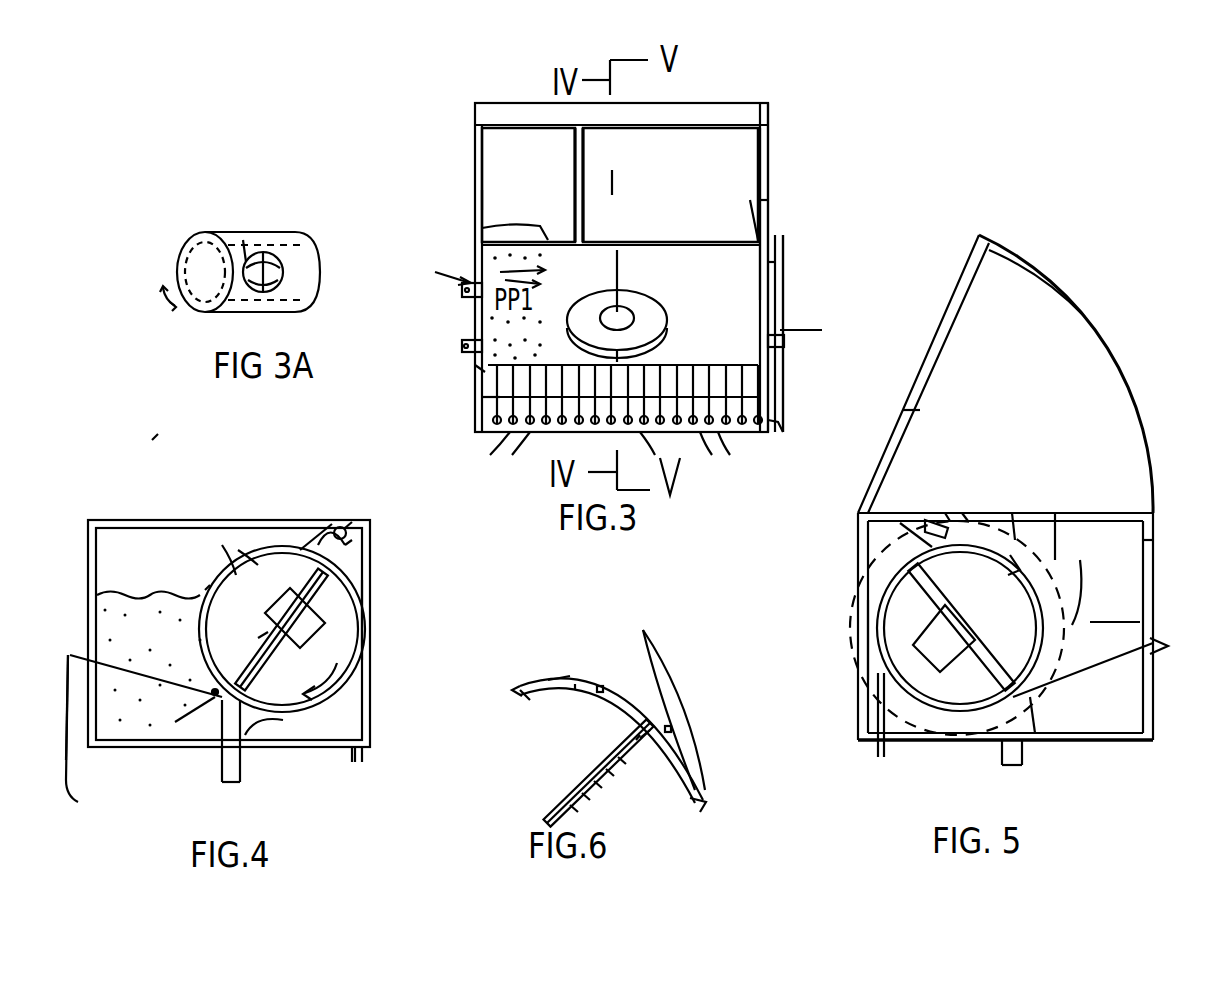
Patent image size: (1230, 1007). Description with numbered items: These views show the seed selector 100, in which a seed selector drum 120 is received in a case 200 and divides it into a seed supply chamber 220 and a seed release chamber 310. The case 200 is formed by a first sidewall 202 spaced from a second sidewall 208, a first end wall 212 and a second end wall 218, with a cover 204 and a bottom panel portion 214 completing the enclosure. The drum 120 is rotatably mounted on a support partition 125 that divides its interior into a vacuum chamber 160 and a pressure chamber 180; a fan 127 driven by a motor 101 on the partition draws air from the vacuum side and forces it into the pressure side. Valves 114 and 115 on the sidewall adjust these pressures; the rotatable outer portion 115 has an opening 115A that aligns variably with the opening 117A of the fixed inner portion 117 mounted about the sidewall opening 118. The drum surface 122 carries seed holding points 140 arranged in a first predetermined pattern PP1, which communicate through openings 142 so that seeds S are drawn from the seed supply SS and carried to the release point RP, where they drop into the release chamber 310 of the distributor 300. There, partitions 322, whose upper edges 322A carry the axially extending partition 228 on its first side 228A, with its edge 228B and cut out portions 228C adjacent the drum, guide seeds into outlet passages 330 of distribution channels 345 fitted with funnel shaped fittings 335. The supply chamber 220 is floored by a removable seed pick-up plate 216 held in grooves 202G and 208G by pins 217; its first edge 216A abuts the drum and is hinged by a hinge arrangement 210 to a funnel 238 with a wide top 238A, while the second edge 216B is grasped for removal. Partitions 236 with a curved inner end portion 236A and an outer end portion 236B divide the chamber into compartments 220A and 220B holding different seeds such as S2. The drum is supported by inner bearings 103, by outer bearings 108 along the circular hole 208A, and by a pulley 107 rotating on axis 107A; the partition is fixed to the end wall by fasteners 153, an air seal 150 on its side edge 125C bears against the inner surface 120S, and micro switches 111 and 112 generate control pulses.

In FIG. 3, the air flow 100 is at (430, 262).
In FIG. 4, the motor 101 is at (311, 644).
In FIG. 4, the inner bearings 103 is at (126, 470).
In FIG. 6, the inner bearings 103 is at (575, 685).
In FIG. 3, the pulley 107 is at (780, 312).
In FIG. 5, the pulley 107 is at (905, 745).
In FIG. 3, the axis 107A is at (800, 330).
In FIG. 5, the outer bearings 108 is at (1022, 560).
In FIG. 5, the micro switch 111 is at (968, 513).
In FIG. 3, the micro switch 112 is at (786, 346).
In FIG. 3, the valve 114 is at (782, 240).
In FIG. 3, the valve 115 is at (476, 366).
In FIG. 3A, the valve 115 is at (186, 262).
In FIG. 3A, the opening 115A is at (272, 252).
In FIG. 3A, the inner portion 117 is at (270, 240).
In FIG. 3A, the opening 117A is at (246, 242).
In FIG. 3, the opening 118 is at (482, 398).
In FIG. 3, the seed selector drum 120 is at (613, 221).
In FIG. 4, the seed selector drum 120 is at (238, 550).
In FIG. 5, the seed selector drum 120 is at (1055, 513).
In FIG. 6, the seed selector drum 120 is at (520, 685).
In FIG. 6, the inner circumferential surface 120S is at (530, 700).
In FIG. 4, the continuous outer drum surface 122 is at (228, 570).
In FIG. 5, the continuous outer drum surface 122 is at (1080, 560).
In FIG. 6, the continuous outer drum surface 122 is at (552, 680).
In FIG. 4, the support partition 125 is at (372, 595).
In FIG. 5, the support partition 125 is at (862, 656).
In FIG. 6, the first side edge 125C is at (640, 738).
In FIG. 3, the fan 127 is at (655, 305).
In FIG. 4, the fan 127 is at (262, 634).
In FIG. 3, the seed holding points 140 is at (553, 271).
In FIG. 4, the seed holding points 140 is at (278, 766).
In FIG. 6, the openings 142 is at (668, 691).
In FIG. 6, the air seal 150 is at (700, 802).
In FIG. 4, the fasteners 153 is at (224, 786).
In FIG. 4, the vacuum chamber 160 is at (273, 593).
In FIG. 5, the vacuum chamber 160 is at (1000, 604).
In FIG. 6, the vacuum chamber 160 is at (540, 811).
In FIG. 5, the pressure chamber 180 is at (953, 653).
In FIG. 6, the pressure chamber 180 is at (638, 742).
In FIG. 3, the case 200 is at (792, 188).
In FIG. 4, the case 200 is at (353, 768).
In FIG. 5, the case 200 is at (1042, 262).
In FIG. 3, the first sidewall 202 is at (462, 346).
In FIG. 3, the groove 202G is at (480, 200).
In FIG. 5, the cover 204 is at (903, 410).
In FIG. 3, the second sidewall 208 is at (782, 252).
In FIG. 3, the circular hole 208A is at (780, 216).
In FIG. 5, the circular hole 208A is at (1010, 550).
In FIG. 3, the groove 208G is at (758, 222).
In FIG. 4, the hinge arrangement 210 is at (180, 720).
In FIG. 3, the first end wall 212 is at (514, 128).
In FIG. 5, the first end wall 212 is at (1150, 565).
In FIG. 5, the bottom panel portion 214 is at (1075, 742).
In FIG. 3, the seed pick-up plate 216 is at (752, 103).
In FIG. 4, the seed pick-up plate 216 is at (72, 765).
In FIG. 5, the seed pick-up plate 216 is at (1148, 742).
In FIG. 4, the first edge 216A is at (212, 750).
In FIG. 5, the first edge 216A is at (1043, 702).
In FIG. 4, the second edge 216B is at (66, 780).
In FIG. 5, the second edge 216B is at (1090, 660).
In FIG. 3, the removable pins 217 is at (760, 165).
In FIG. 3, the second end wall 218 is at (512, 432).
In FIG. 4, the second end wall 218 is at (372, 622).
In FIG. 5, the second end wall 218 is at (862, 641).
In FIG. 4, the seed supply chamber 220 is at (149, 640).
In FIG. 5, the seed supply chamber 220 is at (1125, 621).
In FIG. 3, the first compartment 220A is at (553, 169).
In FIG. 3, the second compartment 220B is at (735, 168).
In FIG. 3, the axially extending partition 228 is at (778, 424).
In FIG. 4, the axially extending partition 228 is at (270, 520).
In FIG. 5, the axially extending partition 228 is at (958, 513).
In FIG. 4, the first side 228A is at (332, 525).
In FIG. 4, the edge 228B is at (280, 520).
In FIG. 3, the cut out portions 228C is at (758, 356).
In FIG. 3, the partition 236 is at (575, 188).
In FIG. 3, the inner end portion 236A is at (482, 240).
In FIG. 3, the outer end portion 236B is at (615, 185).
In FIG. 4, the funnel 238 is at (352, 762).
In FIG. 5, the funnel 238 is at (1002, 765).
In FIG. 3, the wide top 238A is at (776, 272).
In FIG. 4, the wide top 238A is at (237, 697).
In FIG. 4, the seed distributor 300 is at (392, 565).
In FIG. 5, the seed distributor 300 is at (862, 560).
In FIG. 4, the seed release chamber 310 is at (352, 548).
In FIG. 5, the seed release chamber 310 is at (860, 602).
In FIG. 3, the release chamber partitions 322 is at (730, 432).
In FIG. 4, the upper edge 322A is at (346, 528).
In FIG. 3, the seed outlet passages 330 is at (650, 432).
In FIG. 4, the funnel shaped fitting 335 is at (360, 764).
In FIG. 5, the funnel shaped fitting 335 is at (880, 752).
In FIG. 3, the distribution channel 345 is at (488, 432).
In FIG. 4, the release point RP is at (352, 540).
In FIG. 5, the release point RP is at (948, 520).
In FIG. 4, the seeds S is at (206, 588).
In FIG. 6, the seeds S is at (639, 690).
In FIG. 4, the seed supply SS is at (163, 645).
In FIG. 3, the seeds S2 is at (663, 203).